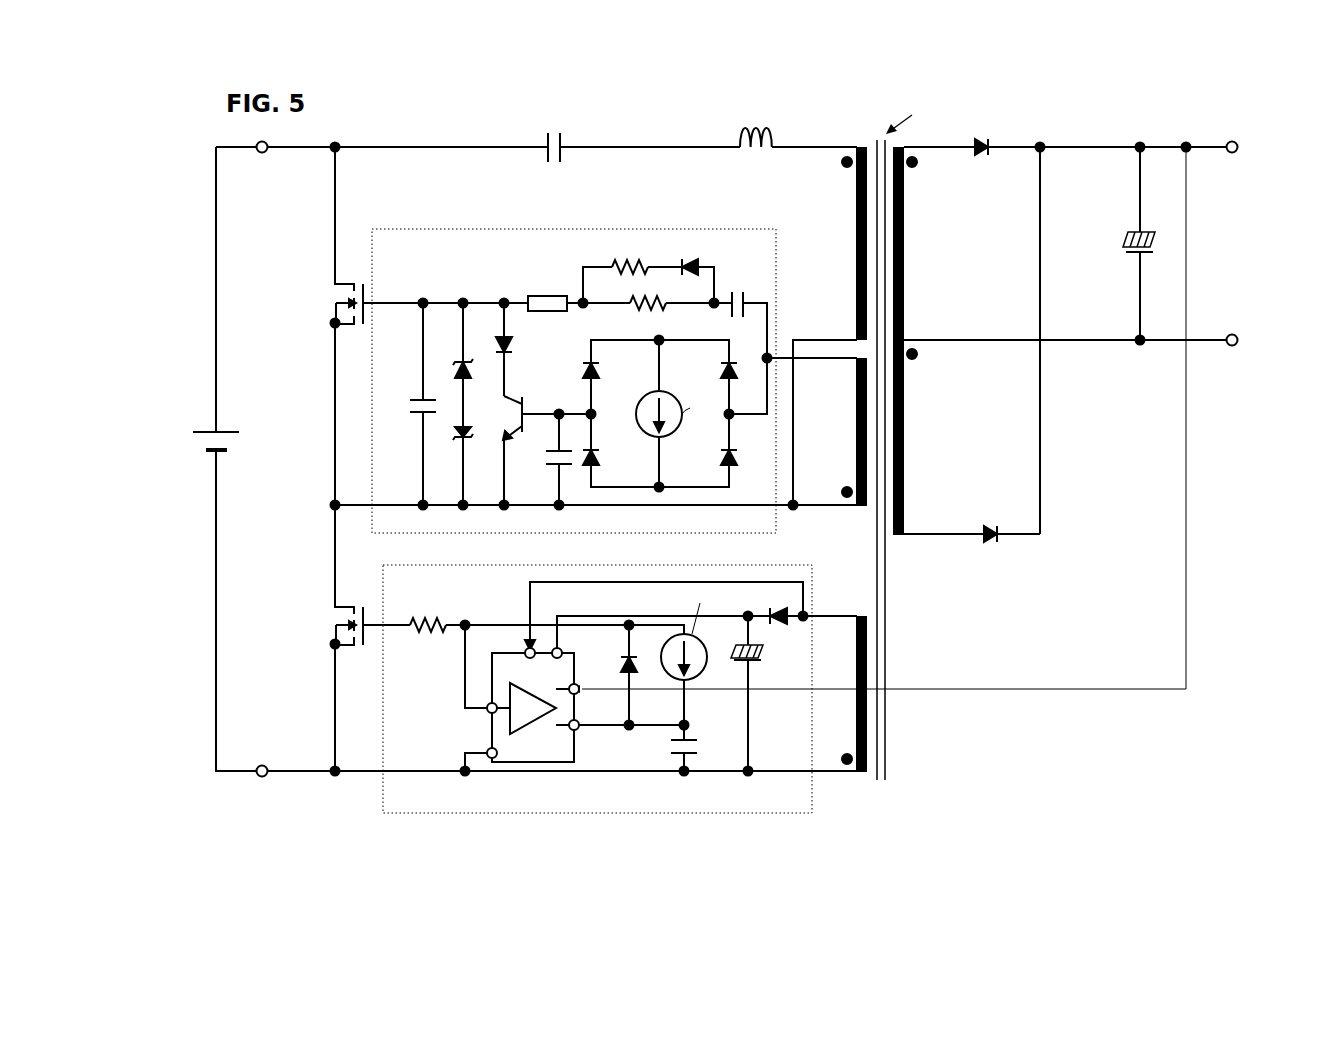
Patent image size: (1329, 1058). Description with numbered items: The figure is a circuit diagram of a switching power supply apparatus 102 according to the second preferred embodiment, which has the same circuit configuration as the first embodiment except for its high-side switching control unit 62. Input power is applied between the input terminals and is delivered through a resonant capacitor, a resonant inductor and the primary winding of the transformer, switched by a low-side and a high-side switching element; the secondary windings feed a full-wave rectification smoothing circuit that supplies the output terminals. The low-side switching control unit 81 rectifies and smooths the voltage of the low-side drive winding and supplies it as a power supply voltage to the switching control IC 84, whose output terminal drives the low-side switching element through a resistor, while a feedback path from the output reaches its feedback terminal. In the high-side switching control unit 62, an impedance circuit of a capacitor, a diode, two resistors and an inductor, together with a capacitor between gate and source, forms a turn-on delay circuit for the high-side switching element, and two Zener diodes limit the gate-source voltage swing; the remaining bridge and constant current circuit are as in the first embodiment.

The high-side switching control unit 62 is at (633, 229).
The low-side switching control unit 81 is at (604, 565).
The switching control integrated circuit 84 is at (560, 763).
The switching power supply apparatus 102 is at (1173, 119).